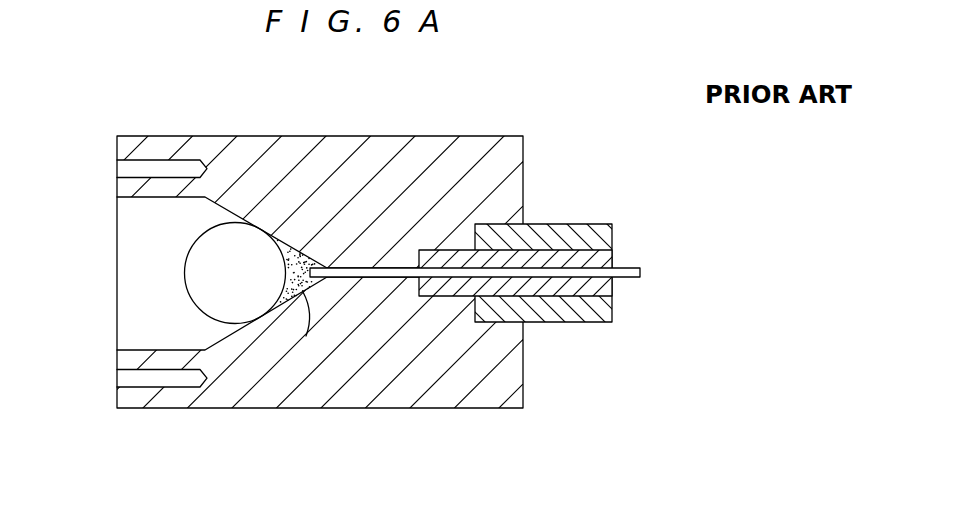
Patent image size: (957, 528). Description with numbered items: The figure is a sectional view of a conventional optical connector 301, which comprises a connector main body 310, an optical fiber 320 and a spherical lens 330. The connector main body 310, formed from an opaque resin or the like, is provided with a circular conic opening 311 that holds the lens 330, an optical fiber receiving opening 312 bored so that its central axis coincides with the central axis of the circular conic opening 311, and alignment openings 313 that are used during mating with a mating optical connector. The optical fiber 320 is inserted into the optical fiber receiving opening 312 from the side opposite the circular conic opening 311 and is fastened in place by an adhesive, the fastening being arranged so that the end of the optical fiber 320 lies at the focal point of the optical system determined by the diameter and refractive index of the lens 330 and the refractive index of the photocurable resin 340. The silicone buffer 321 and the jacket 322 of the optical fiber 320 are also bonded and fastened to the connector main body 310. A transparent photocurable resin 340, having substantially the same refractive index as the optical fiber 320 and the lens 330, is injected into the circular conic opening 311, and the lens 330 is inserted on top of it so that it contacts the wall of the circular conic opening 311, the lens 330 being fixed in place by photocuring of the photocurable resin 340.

The optical connector 301 is at (385, 267).
The connector main body 310 is at (307, 395).
The circular conic opening 311 is at (215, 204).
The optical fiber receiving opening 312 is at (377, 279).
The alignment openings 313 is at (135, 168).
The optical fiber 320 is at (627, 269).
The silicone buffer 321 is at (448, 297).
The jacket 322 is at (558, 322).
The spherical lens 330 is at (185, 273).
The photocurable resin 340 is at (303, 290).